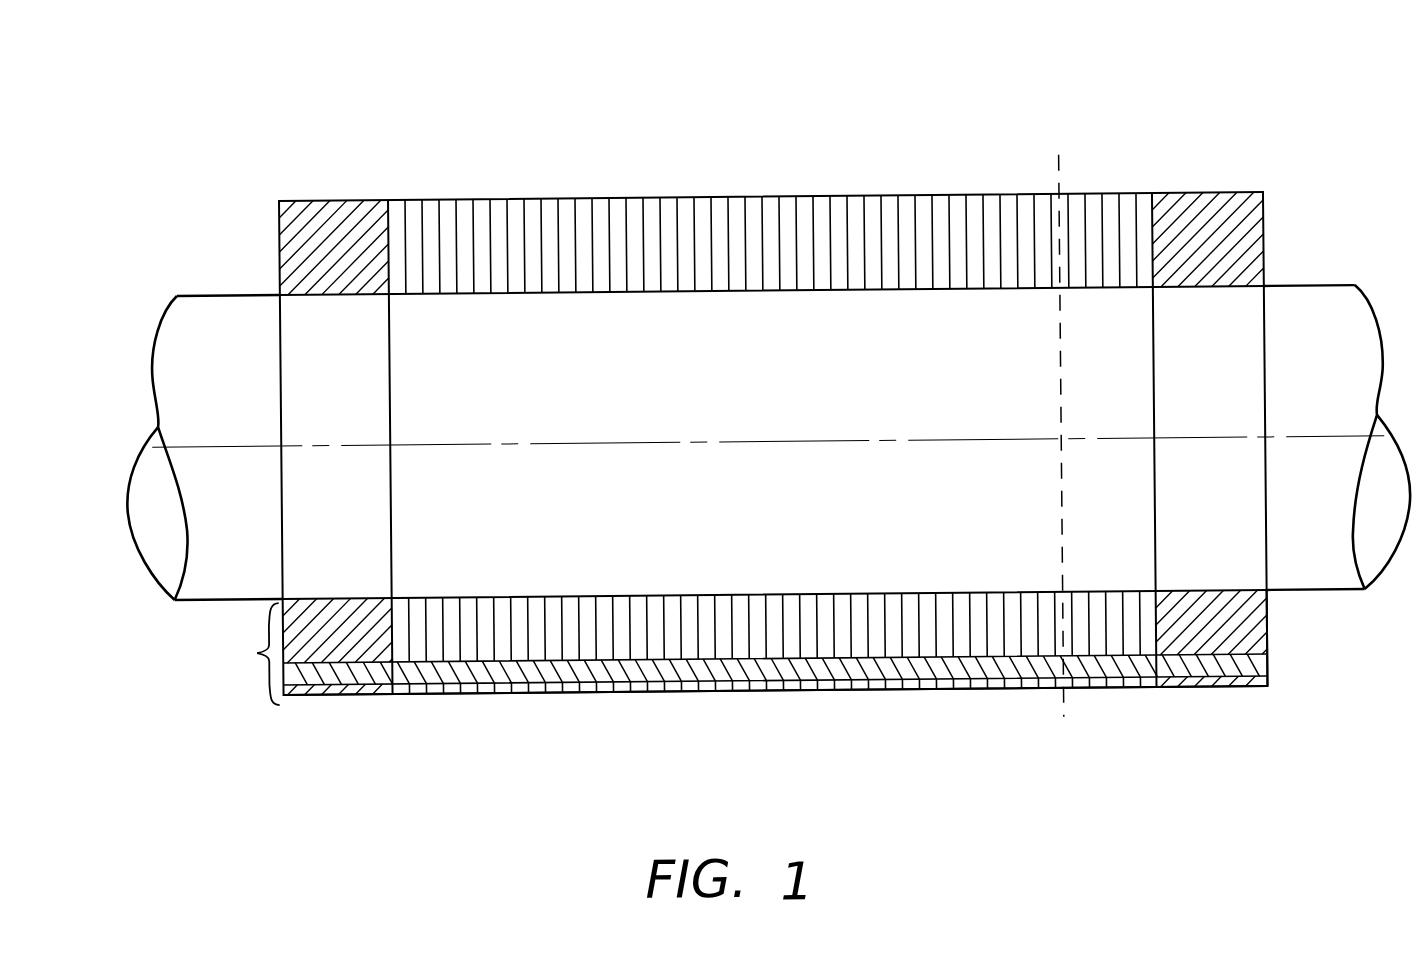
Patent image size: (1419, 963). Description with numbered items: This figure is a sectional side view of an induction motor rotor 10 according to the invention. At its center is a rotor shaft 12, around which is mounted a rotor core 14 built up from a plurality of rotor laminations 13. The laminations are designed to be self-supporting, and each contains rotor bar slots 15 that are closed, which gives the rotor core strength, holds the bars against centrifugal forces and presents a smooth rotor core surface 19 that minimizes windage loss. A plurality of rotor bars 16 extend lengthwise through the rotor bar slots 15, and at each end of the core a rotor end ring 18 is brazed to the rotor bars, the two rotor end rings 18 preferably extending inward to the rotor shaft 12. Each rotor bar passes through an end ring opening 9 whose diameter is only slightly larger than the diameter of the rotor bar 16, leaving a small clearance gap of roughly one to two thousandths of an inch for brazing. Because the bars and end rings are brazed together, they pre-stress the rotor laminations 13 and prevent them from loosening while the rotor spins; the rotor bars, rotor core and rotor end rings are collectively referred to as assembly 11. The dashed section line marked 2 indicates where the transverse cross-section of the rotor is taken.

The end ring opening 9 is at (1261, 612).
The induction motor rotor 10 is at (719, 422).
The assembly 11 is at (228, 640).
The rotor shaft 12 is at (868, 411).
The rotor laminations 13 is at (500, 214).
The rotor core 14 is at (705, 198).
The rotor bar slots 15 is at (464, 647).
The rotor bars 16 is at (516, 685).
The rotor end rings 18 is at (342, 214).
The rotor core surface 19 is at (385, 698).
The section line 2- 2 is at (1077, 744).